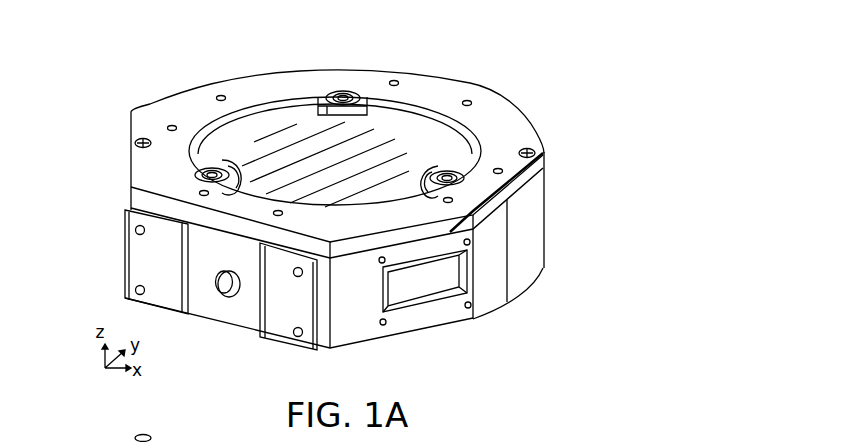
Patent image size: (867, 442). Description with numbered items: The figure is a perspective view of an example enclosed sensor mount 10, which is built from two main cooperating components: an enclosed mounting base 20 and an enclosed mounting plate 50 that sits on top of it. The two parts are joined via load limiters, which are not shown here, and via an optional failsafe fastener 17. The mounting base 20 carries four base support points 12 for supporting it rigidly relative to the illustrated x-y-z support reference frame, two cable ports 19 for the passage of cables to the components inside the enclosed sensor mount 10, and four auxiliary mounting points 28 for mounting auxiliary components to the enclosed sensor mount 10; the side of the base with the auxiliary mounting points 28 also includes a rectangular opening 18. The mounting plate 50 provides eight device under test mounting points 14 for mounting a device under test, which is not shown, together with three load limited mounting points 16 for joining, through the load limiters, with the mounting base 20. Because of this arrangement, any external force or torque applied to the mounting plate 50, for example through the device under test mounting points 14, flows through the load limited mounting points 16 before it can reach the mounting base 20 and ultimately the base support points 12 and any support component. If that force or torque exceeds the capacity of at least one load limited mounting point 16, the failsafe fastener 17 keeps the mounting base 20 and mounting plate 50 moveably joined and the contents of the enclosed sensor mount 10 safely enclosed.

The enclosed sensor mount 10 is at (548, 72).
The base support point 12 is at (134, 289).
The device under test mounting point 14 is at (172, 125).
The load limited mounting point 16 is at (352, 91).
The failsafe fastener 17 is at (138, 139).
The window opening 18 is at (420, 281).
The cable port 19 is at (227, 292).
The mounting base 20 is at (540, 265).
The auxiliary mounting point 28 is at (387, 325).
The mounting plate 50 is at (258, 80).